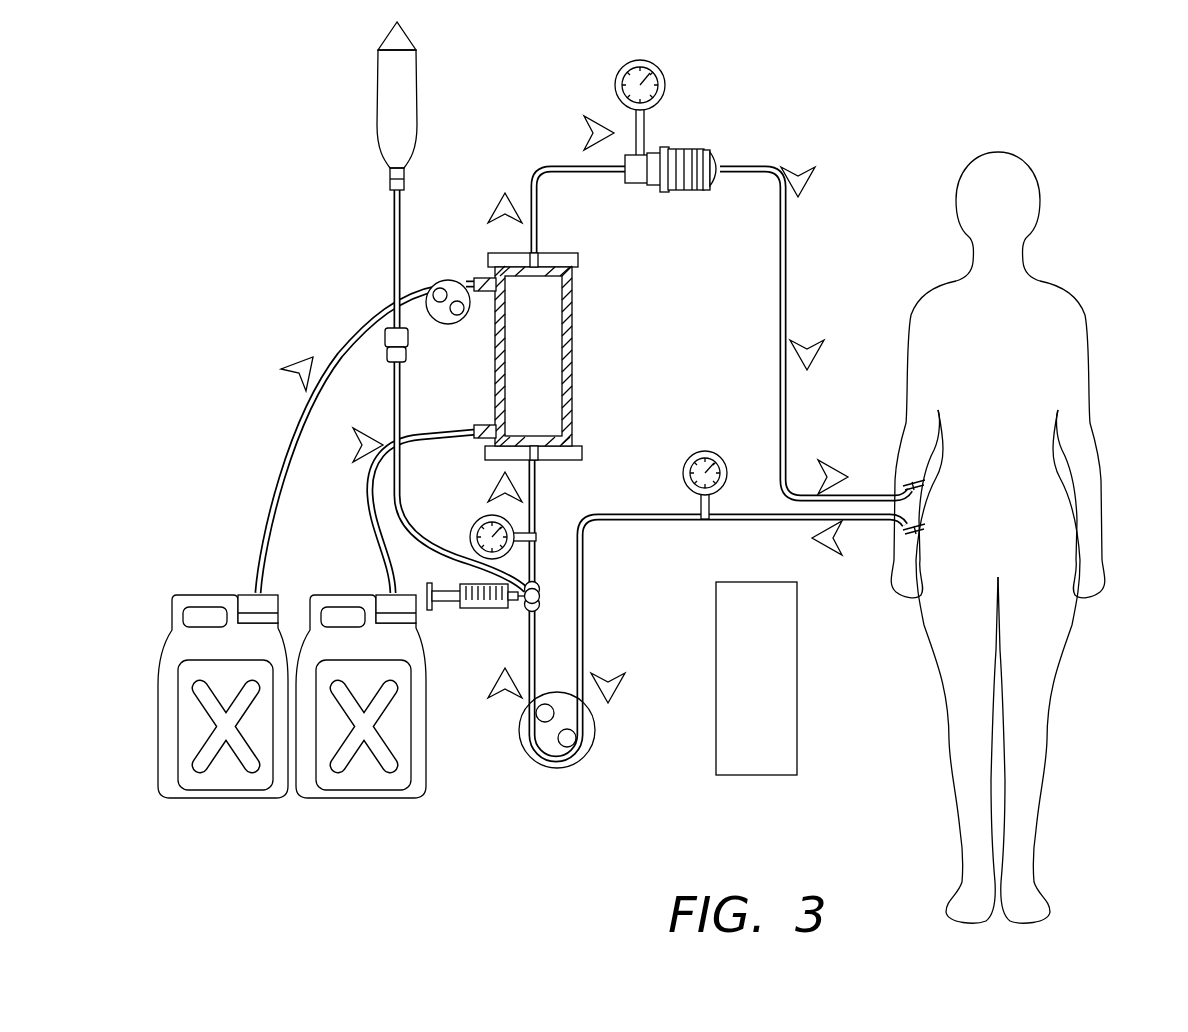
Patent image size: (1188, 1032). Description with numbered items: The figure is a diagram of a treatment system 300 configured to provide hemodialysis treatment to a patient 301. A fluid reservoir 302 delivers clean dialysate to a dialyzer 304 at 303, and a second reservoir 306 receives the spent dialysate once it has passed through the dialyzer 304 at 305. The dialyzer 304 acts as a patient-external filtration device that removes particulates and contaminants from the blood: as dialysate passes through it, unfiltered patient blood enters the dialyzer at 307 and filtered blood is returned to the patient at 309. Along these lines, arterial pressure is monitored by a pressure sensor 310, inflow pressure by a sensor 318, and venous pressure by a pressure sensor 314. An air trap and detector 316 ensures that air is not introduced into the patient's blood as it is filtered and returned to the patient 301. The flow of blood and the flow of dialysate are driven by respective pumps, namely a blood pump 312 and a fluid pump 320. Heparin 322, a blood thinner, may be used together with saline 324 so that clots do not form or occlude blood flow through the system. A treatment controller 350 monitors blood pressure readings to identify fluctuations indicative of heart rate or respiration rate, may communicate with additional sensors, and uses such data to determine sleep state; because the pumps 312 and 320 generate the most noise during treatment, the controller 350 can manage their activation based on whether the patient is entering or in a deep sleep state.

The treatment system 300 is at (1037, 100).
The patient 301 is at (1085, 312).
The fluid reservoir 302 is at (225, 800).
The clean dialysate delivery path 303 is at (300, 370).
The dialyzer 304 is at (571, 353).
The spent dialysate return path 305 is at (352, 447).
The reservoir 306 is at (395, 800).
The unfiltered blood inflow path 307 is at (828, 555).
The filtered blood return path 309 is at (800, 166).
The pressure sensor 310 is at (700, 452).
The blood pump 312 is at (557, 771).
The pressure sensor 314 is at (650, 66).
The air trap and detector 316 is at (692, 150).
The sensor 318 is at (520, 530).
The fluid pump 320 is at (447, 280).
The heparin 322 is at (540, 597).
The saline 324 is at (377, 107).
The treatment controller 350 is at (760, 776).